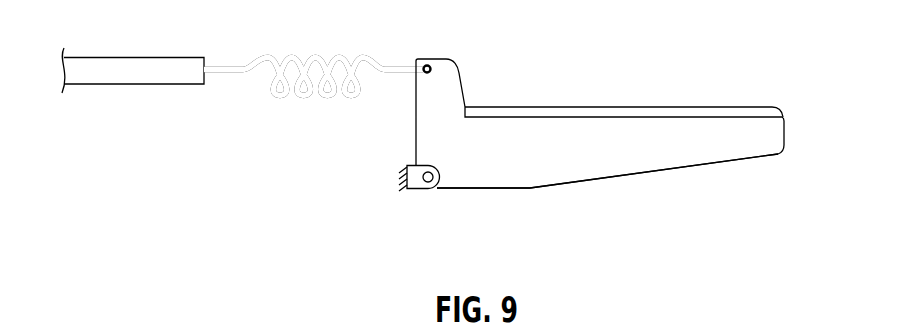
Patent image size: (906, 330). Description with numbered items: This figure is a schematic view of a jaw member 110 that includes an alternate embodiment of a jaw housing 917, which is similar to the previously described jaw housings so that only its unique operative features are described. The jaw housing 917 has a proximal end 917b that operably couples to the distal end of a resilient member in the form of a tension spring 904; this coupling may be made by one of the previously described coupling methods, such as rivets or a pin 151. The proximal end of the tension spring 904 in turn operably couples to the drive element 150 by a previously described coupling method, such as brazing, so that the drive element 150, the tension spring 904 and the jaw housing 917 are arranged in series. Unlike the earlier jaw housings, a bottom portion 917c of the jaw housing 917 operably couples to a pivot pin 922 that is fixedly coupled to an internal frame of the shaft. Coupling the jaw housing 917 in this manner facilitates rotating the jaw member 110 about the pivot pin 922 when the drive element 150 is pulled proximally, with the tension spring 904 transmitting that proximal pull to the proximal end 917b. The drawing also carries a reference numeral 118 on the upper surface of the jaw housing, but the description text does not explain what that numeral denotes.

The jaw member 110 is at (591, 140).
The contact layer / pad 118 is at (770, 104).
The drive element 150 is at (158, 56).
The pin 151 is at (427, 64).
The tension spring 904 is at (315, 53).
The jaw housing 917 is at (771, 156).
The proximal end 917b is at (475, 175).
The bottom portion 917c is at (532, 189).
The pivot pin 922 is at (426, 170).